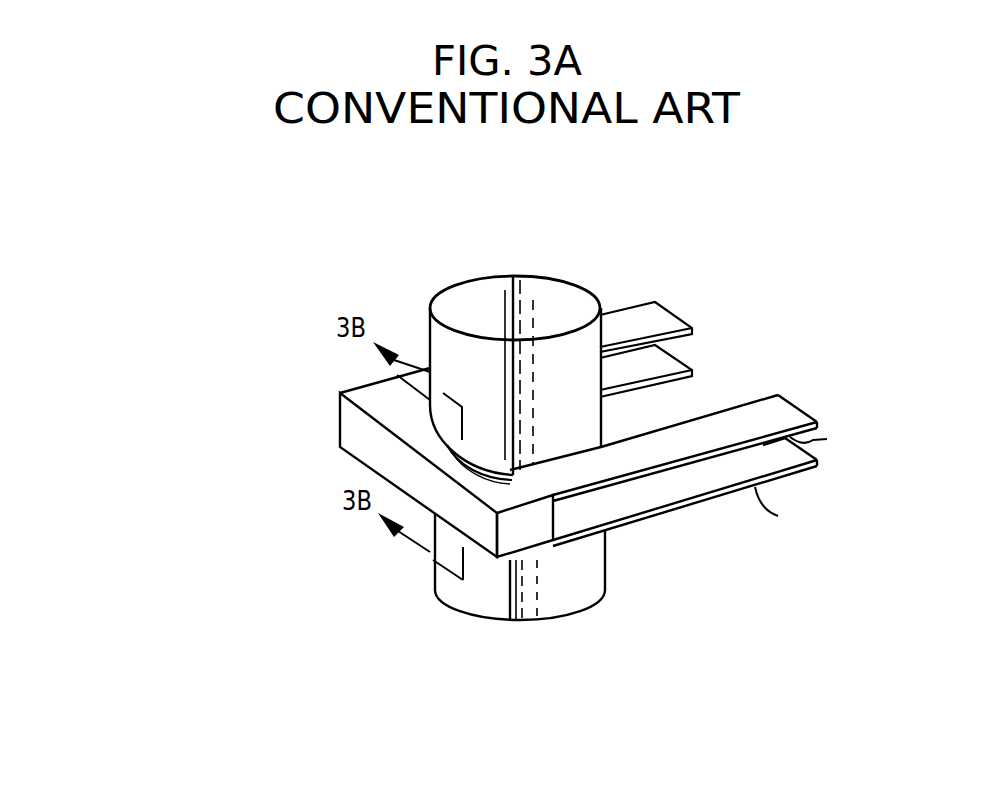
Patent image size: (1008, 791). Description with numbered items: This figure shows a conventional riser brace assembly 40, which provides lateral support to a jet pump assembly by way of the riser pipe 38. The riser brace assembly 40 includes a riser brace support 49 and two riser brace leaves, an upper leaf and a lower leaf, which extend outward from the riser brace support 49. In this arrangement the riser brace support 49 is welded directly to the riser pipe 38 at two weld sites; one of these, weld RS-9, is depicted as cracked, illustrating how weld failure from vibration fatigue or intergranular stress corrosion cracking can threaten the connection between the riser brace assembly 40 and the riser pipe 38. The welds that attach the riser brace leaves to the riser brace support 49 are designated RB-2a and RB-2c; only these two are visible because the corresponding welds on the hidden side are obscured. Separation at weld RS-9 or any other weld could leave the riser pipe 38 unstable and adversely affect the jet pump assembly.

The riser pipe 38 is at (580, 615).
The riser brace assembly 40 is at (608, 300).
The riser brace support 49 is at (365, 443).
The weld RB-2a is at (557, 506).
The weld RB-2c is at (557, 541).
The weld RS-9 is at (457, 460).